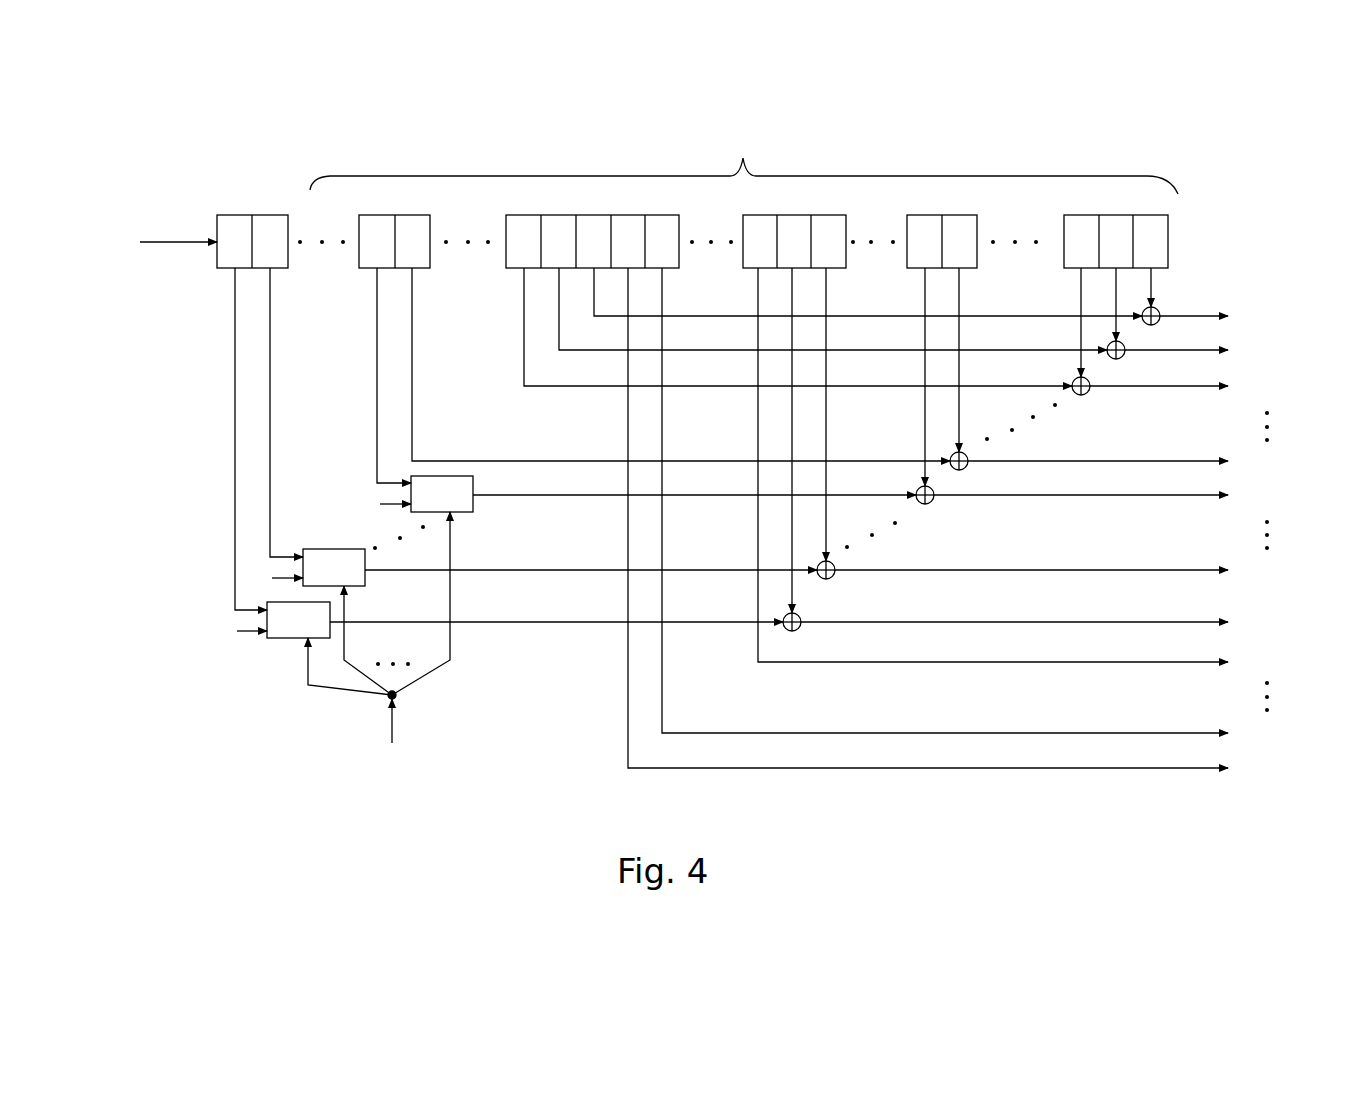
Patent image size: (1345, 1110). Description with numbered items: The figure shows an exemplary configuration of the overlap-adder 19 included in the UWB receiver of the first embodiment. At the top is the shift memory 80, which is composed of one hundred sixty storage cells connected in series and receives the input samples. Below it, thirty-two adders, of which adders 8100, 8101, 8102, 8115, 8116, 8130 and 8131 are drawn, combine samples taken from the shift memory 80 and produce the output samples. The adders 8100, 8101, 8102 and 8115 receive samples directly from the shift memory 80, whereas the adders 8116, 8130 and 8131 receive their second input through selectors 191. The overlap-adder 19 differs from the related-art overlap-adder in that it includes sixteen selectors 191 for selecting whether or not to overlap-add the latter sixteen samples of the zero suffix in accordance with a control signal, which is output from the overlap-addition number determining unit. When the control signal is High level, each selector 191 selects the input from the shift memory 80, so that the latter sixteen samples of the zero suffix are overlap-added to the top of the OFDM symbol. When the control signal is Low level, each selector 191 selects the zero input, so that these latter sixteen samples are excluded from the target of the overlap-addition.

The overlap-adder 19 is at (863, 65).
The shift memory 80 is at (697, 197).
The selector 191 is at (473, 512).
The adder 8100 is at (1157, 323).
The adder 8101 is at (1122, 357).
The adder 8102 is at (1087, 393).
The adder 8115 is at (965, 468).
The adder 8116 is at (931, 502).
The adder 8130 is at (832, 577).
The adder 8131 is at (798, 629).